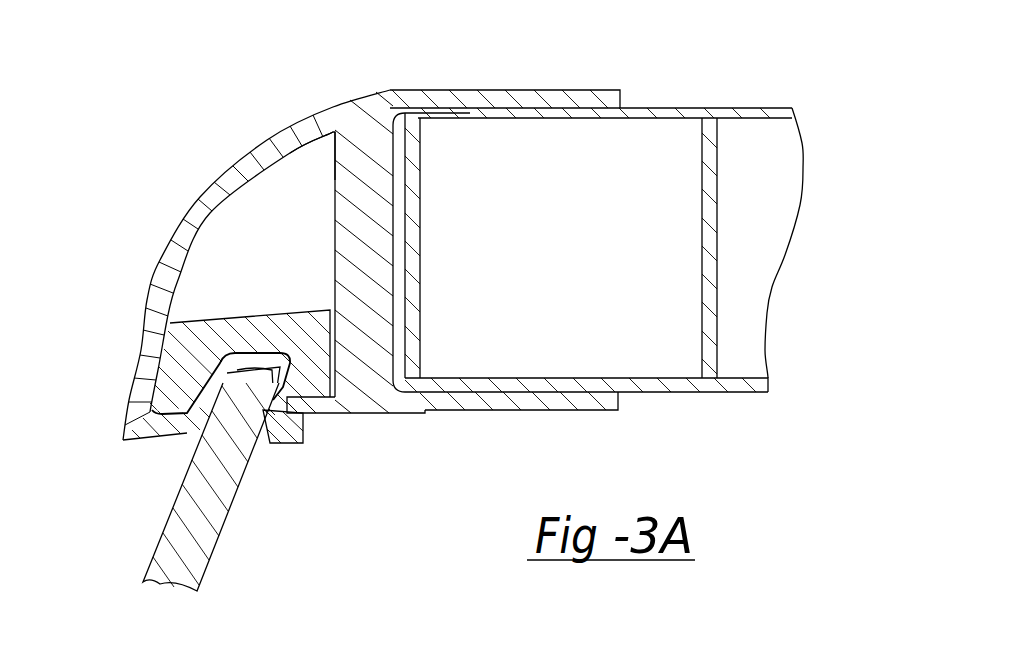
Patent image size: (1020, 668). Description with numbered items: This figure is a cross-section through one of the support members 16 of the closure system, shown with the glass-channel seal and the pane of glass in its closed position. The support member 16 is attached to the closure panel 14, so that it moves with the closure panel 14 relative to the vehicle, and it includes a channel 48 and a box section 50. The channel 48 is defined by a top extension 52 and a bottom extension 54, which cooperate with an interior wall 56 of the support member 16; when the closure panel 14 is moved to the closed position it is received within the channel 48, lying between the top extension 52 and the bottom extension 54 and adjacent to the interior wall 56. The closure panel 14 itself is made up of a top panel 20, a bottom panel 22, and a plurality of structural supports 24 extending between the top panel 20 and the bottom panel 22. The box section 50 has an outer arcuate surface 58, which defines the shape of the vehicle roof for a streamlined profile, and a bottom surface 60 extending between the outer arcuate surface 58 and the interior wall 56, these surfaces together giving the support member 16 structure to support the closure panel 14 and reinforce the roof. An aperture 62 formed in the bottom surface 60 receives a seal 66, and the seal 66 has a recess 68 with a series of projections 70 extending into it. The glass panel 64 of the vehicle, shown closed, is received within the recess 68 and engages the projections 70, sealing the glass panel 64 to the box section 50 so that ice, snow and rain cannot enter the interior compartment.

The closure panel 14 is at (599, 248).
The support member 16 is at (259, 289).
The top panel 20 is at (781, 108).
The bottom panel 22 is at (752, 392).
The structural support 24 is at (717, 190).
The channel 48 is at (400, 177).
The box section 50 is at (290, 178).
The top extension 52 is at (607, 90).
The bottom extension 54 is at (602, 410).
The interior wall 56 is at (350, 205).
The outer arcuate surface 58 is at (200, 200).
The bottom surface 60 is at (323, 413).
The aperture 62 is at (270, 432).
The glass panel 64 is at (203, 487).
The seal 66 is at (160, 358).
The recess 68 is at (247, 355).
The projections 70 is at (270, 378).